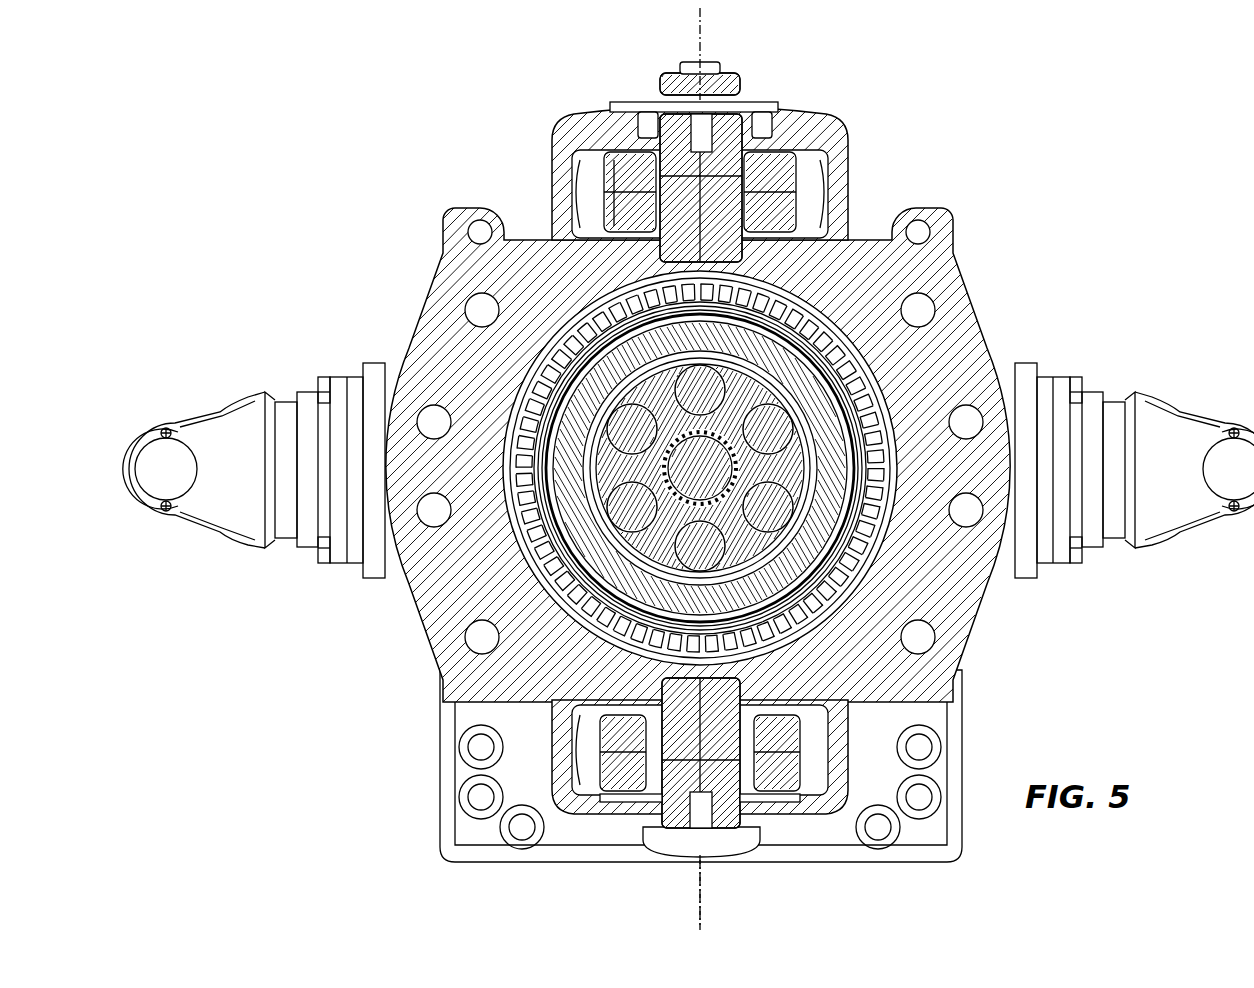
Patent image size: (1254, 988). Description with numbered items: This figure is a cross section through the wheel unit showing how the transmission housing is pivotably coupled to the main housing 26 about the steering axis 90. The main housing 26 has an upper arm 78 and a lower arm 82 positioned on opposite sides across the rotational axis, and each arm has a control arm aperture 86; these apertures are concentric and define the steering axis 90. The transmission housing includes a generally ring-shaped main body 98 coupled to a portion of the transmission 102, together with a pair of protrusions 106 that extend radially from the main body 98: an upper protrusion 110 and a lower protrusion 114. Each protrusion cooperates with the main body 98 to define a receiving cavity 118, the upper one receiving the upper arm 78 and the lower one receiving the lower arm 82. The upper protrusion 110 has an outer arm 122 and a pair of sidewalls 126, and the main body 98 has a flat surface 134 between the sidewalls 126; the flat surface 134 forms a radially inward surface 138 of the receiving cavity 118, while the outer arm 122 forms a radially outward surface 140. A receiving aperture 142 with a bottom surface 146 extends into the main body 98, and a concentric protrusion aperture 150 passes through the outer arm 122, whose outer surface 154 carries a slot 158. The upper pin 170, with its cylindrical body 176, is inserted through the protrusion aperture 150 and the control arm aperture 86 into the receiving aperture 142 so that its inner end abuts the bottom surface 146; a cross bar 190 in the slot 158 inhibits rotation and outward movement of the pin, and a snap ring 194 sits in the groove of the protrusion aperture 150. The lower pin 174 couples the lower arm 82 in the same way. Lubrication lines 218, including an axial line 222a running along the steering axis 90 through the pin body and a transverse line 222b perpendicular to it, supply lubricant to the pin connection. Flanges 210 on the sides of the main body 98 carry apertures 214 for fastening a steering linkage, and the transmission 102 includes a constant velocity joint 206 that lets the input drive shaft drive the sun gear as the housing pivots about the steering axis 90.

The main housing 26 is at (950, 805).
The upper arm 78 is at (678, 208).
The lower arm 82 is at (790, 748).
The control arm aperture 86 is at (628, 770).
The steering axis 90 is at (704, 888).
The main body 98 is at (962, 318).
The transmission 102 is at (848, 554).
The protrusions 106 is at (938, 102).
The upper protrusion 110 is at (838, 142).
The lower protrusion 114 is at (835, 793).
The receiving cavity 118 is at (575, 212).
The outer arm 122 is at (838, 136).
The sidewalls 126 is at (588, 198).
The flat surface 134 is at (800, 228).
The radially inward surface 138 is at (555, 266).
The radially outward surface 140 is at (850, 150).
The receiving aperture 142 is at (815, 262).
The bottom surface 146 is at (665, 289).
The protrusion aperture 150 is at (628, 170).
The outer surface 154 is at (777, 104).
The slot 158 is at (805, 118).
The upper pin 170 is at (672, 108).
The lower pin 174 is at (778, 806).
The cylindrical body 176 is at (614, 174).
The cross bar 190 is at (718, 75).
The snap ring 194 is at (698, 100).
The constant velocity joint 206 is at (598, 488).
The flanges 210 is at (398, 580).
The apertures 214 is at (920, 302).
The lubrication lines 218 is at (690, 735).
The axial line 222a is at (612, 712).
The transverse line 222b is at (695, 805).